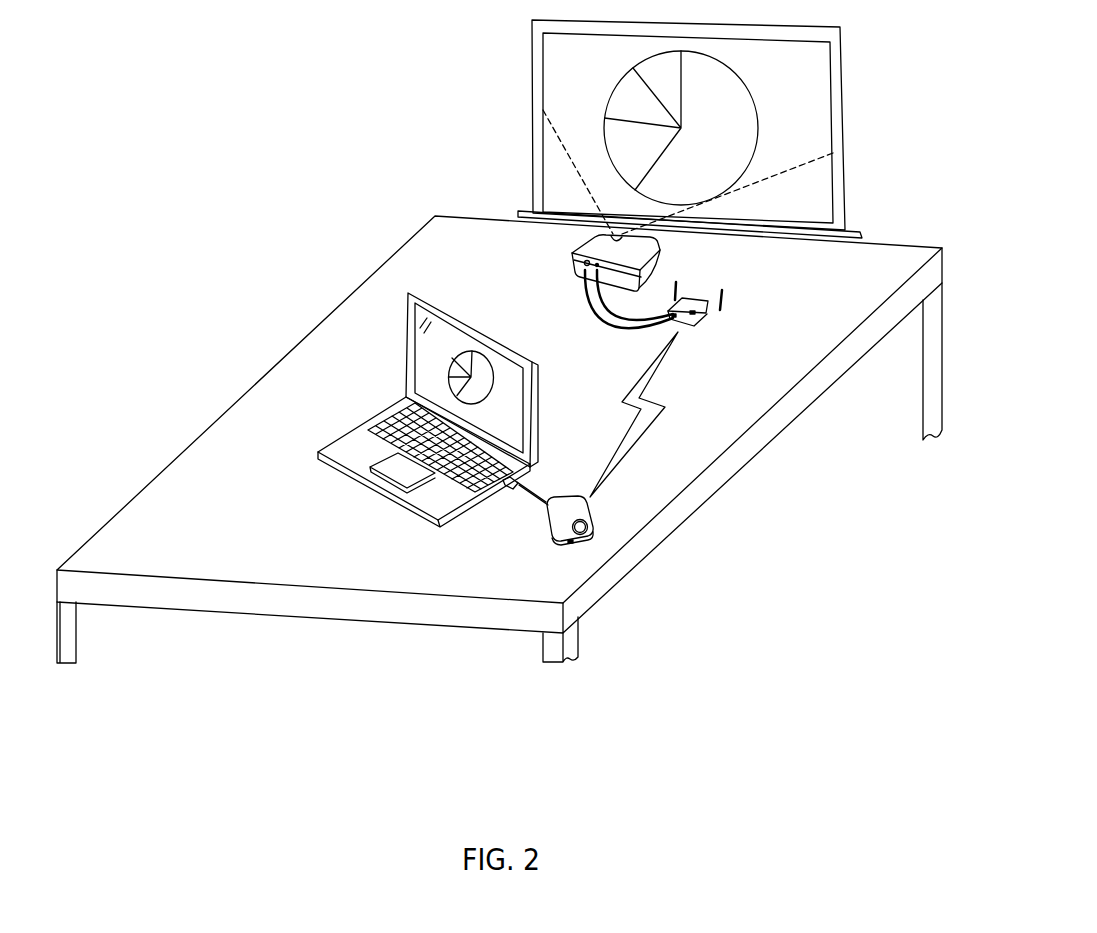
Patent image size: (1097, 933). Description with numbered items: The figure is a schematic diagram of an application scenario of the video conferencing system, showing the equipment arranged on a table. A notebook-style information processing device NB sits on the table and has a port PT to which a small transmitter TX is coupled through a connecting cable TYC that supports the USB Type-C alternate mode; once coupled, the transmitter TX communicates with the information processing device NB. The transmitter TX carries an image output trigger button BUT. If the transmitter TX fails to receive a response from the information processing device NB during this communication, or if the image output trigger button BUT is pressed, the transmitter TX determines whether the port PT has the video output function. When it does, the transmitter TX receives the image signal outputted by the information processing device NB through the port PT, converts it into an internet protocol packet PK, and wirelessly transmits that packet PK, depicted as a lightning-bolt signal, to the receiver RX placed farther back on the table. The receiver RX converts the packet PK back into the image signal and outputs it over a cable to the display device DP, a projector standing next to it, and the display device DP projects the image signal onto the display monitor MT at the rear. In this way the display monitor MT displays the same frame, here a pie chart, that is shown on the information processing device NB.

The display monitor MT is at (532, 35).
The display device DP is at (590, 247).
The information processing device NB is at (408, 328).
The receiver RX is at (705, 317).
The internet protocol (IP) packet PK is at (653, 413).
The transmitter TX is at (582, 510).
The image output trigger button BUT is at (590, 532).
The port PT is at (510, 487).
The connecting cable TYC is at (533, 495).